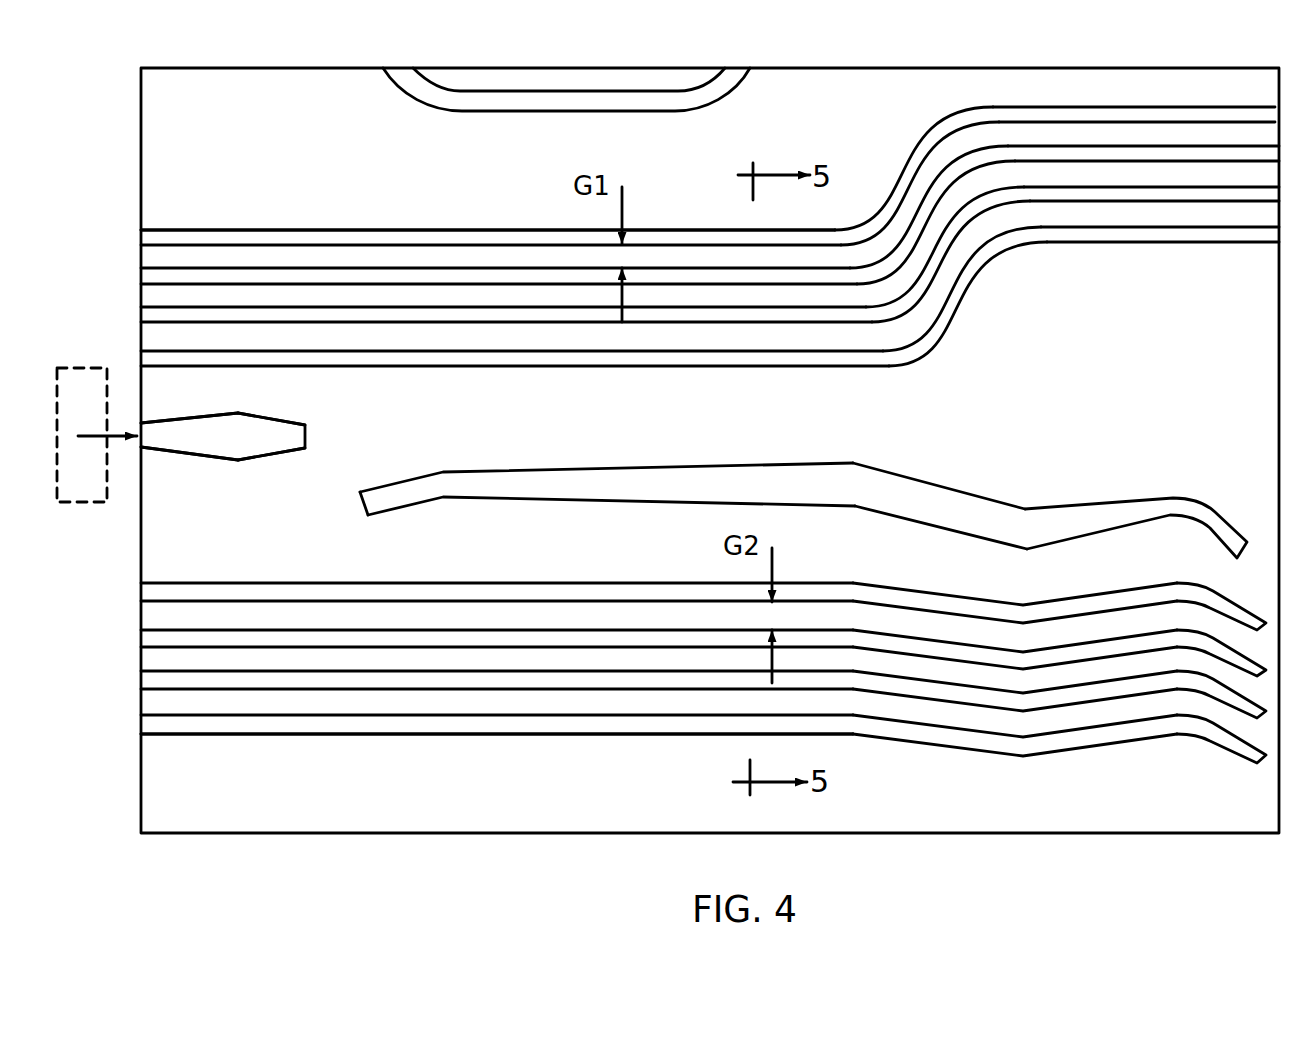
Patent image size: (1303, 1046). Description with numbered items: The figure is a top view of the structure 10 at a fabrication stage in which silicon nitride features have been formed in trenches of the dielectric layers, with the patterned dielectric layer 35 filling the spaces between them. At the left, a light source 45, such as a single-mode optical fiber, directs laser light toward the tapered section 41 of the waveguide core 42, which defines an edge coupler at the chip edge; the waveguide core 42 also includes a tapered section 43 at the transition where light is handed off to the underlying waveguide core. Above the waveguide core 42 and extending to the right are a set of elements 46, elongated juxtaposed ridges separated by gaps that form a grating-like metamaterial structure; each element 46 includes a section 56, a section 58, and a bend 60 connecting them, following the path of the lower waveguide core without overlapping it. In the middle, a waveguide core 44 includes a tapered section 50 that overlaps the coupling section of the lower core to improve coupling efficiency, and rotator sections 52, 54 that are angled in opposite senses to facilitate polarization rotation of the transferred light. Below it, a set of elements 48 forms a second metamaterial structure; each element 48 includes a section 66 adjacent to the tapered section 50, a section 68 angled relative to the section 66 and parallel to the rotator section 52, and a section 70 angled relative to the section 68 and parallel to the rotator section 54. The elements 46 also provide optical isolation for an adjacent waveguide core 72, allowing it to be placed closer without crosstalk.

The structure 10 is at (177, 57).
The dielectric layer 35 is at (190, 794).
The tapered section 41 is at (208, 437).
The waveguide core 42 is at (297, 465).
The tapered section 43 is at (248, 502).
The waveguide core 44 is at (358, 535).
The light source 45 is at (96, 413).
The elements 46 is at (710, 285).
The elements 48 is at (703, 669).
The tapered section 50 is at (745, 486).
The rotator section 52 is at (968, 510).
The rotator section 54 is at (1100, 517).
The section 56 is at (480, 235).
The section 58 is at (1100, 237).
The bend 60 is at (955, 317).
The section 66 is at (378, 723).
The section 68 is at (938, 737).
The section 70 is at (1098, 737).
The waveguide core 72 is at (577, 98).